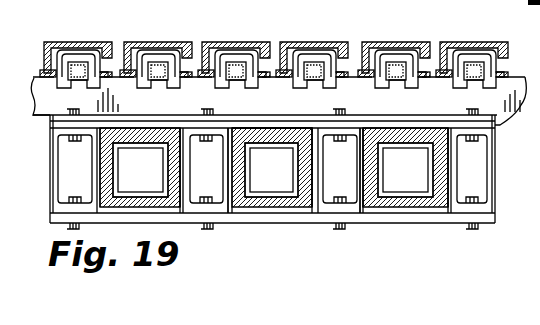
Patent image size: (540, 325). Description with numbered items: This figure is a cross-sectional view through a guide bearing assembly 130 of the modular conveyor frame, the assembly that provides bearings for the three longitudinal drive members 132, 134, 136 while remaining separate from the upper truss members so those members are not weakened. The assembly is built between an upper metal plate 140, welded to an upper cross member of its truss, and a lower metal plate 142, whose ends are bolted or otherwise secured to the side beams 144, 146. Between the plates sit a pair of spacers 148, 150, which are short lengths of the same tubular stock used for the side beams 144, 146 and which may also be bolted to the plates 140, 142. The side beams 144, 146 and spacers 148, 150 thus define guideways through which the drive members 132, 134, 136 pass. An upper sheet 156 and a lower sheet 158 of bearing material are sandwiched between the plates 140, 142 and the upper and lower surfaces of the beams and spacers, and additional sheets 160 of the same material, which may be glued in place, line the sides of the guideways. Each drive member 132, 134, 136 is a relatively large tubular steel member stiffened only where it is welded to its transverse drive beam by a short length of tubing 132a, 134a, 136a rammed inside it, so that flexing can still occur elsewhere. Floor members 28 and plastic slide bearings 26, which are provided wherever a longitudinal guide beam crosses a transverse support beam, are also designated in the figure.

The bearing 26 is at (80, 50).
The floor member 28 is at (229, 40).
The bearing assembly 130 is at (265, 232).
The longitudinal drive member 132 is at (413, 128).
The short length of tubing 132a is at (403, 205).
The longitudinal drive member 134 is at (312, 128).
The short length of tubing 134a is at (297, 206).
The longitudinal drive member 136 is at (133, 130).
The short length of tubing 136a is at (167, 177).
The upper metal plate 140 is at (287, 128).
The lower metal plate 142 is at (440, 222).
The side beam 144 is at (52, 175).
The side beam 146 is at (510, 160).
The spacer 148 is at (193, 128).
The spacer 150 is at (367, 128).
The upper sheet 156 is at (232, 128).
The lower sheet 158 is at (226, 213).
The sheet 160 is at (100, 168).